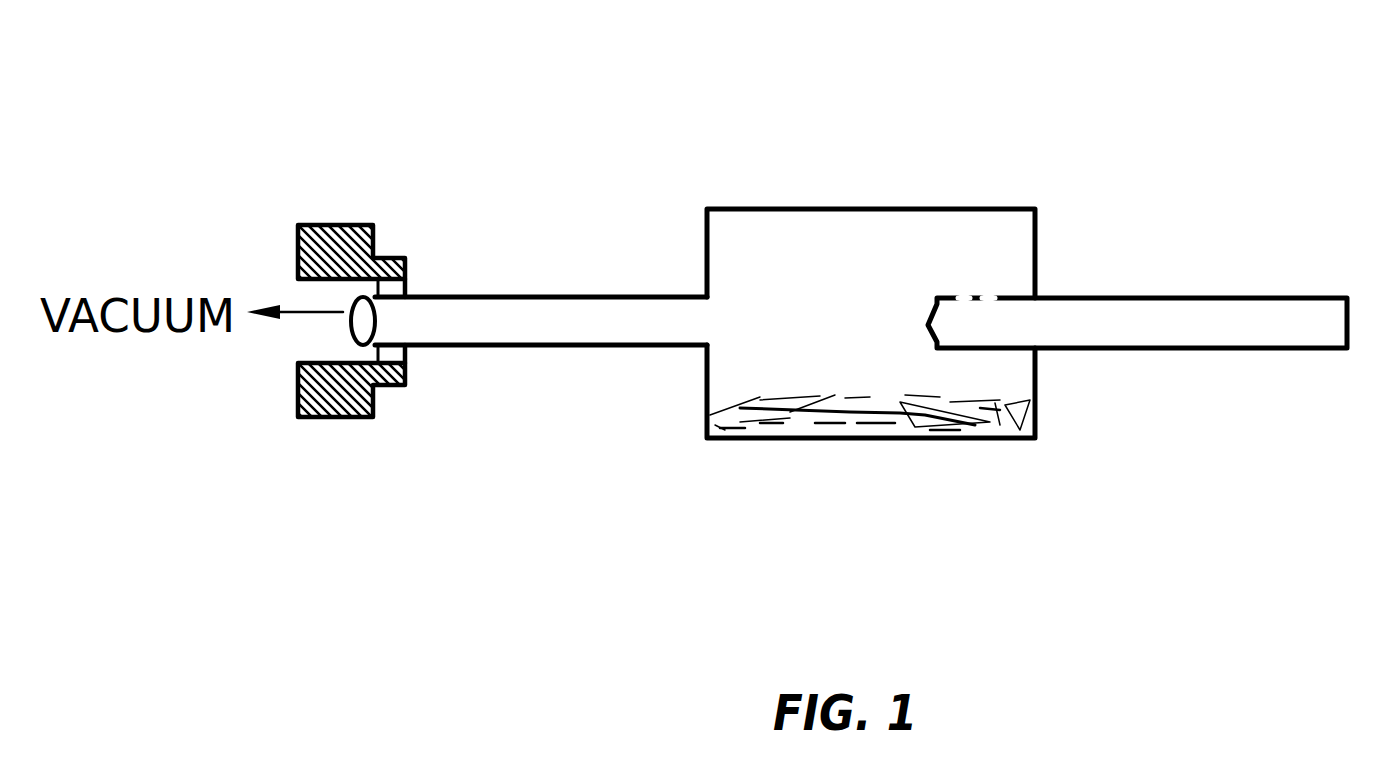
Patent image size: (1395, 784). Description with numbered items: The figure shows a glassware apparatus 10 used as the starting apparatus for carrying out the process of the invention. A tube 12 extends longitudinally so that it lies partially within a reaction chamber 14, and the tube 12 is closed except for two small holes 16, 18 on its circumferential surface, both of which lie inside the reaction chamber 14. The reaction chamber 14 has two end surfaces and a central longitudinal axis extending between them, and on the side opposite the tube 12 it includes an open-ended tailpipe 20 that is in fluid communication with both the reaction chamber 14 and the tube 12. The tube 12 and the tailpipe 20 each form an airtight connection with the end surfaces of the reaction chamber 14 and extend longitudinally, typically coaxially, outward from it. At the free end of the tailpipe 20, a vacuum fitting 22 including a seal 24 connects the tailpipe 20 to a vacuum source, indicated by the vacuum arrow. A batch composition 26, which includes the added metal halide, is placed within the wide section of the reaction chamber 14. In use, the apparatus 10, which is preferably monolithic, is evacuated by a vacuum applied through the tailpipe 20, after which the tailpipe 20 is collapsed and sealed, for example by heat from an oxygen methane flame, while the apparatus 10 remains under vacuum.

The glassware apparatus 10 is at (1068, 115).
The tube 12 is at (1173, 353).
The reaction chamber 14 is at (818, 206).
The small hole 16 is at (960, 296).
The small hole 18 is at (985, 296).
The tailpipe 20 is at (470, 295).
The vacuum fitting 22 is at (332, 224).
The seal 24 is at (408, 353).
The batch composition 26 is at (900, 423).